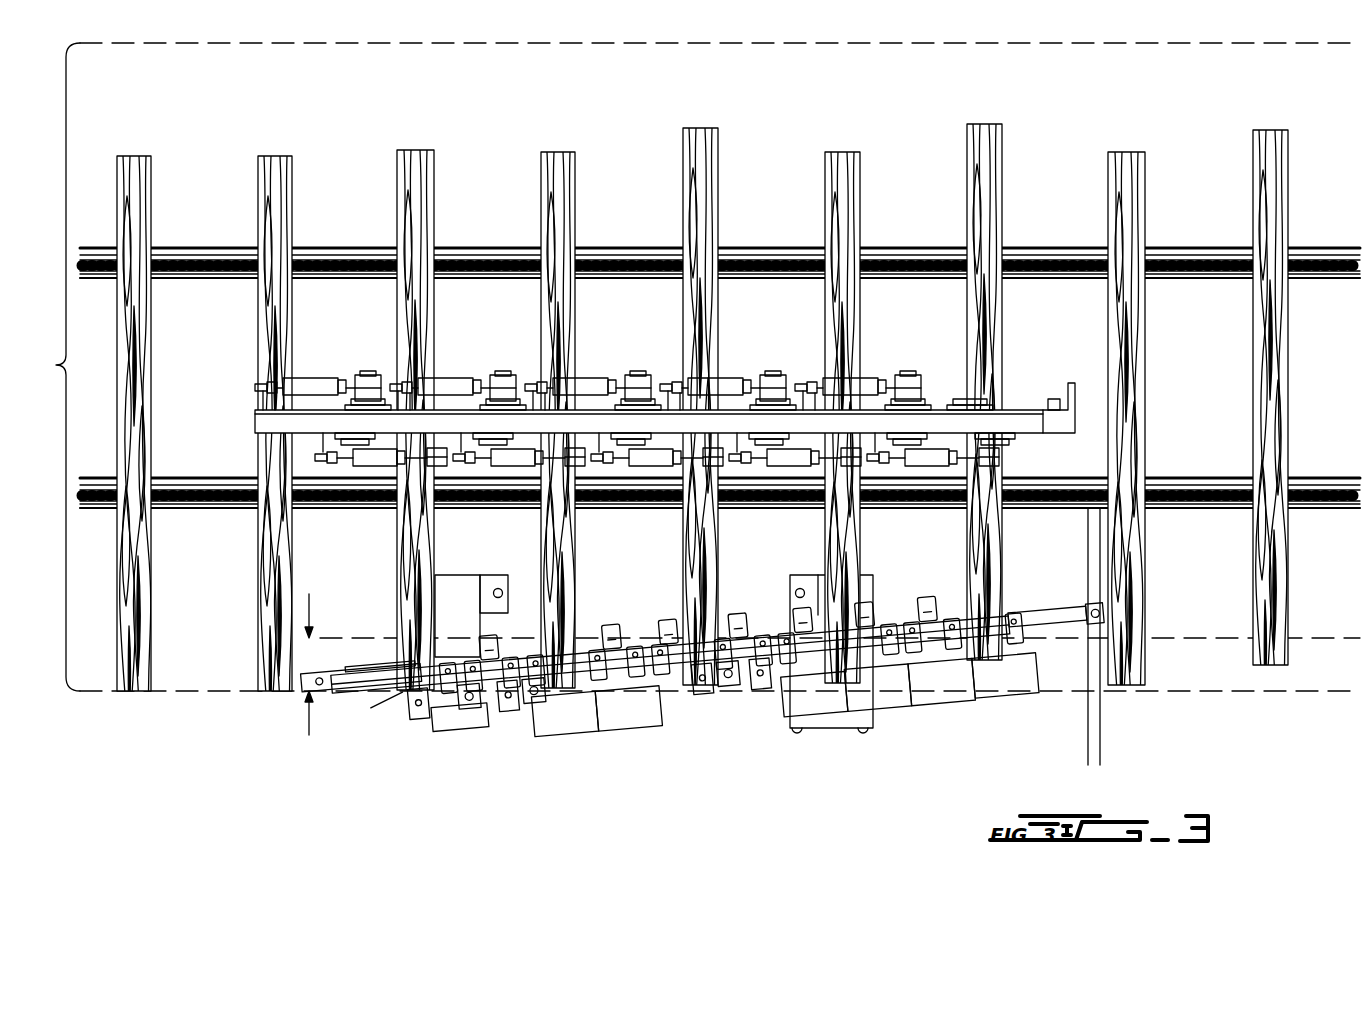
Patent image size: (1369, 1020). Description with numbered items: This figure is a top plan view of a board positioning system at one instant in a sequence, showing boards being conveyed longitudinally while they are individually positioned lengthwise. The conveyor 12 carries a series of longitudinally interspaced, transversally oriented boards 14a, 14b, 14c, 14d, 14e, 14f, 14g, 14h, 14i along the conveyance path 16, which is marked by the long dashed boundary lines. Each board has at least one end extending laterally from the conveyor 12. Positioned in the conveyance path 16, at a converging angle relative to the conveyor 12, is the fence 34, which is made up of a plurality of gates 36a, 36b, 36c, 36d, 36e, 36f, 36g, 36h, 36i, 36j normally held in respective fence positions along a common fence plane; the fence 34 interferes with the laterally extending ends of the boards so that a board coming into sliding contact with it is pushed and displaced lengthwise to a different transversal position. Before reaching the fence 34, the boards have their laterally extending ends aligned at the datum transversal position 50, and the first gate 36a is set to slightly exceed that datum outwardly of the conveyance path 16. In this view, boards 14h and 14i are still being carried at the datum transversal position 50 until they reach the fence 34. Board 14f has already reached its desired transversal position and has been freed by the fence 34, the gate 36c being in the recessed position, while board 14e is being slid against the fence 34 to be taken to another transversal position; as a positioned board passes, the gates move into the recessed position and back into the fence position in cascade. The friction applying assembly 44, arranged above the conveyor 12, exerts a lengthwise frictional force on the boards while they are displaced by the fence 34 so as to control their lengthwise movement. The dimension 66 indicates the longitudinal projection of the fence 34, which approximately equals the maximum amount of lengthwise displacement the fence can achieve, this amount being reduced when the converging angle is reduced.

The conveyor 12 is at (1311, 240).
The board 14a is at (1268, 130).
The board 14b is at (1125, 152).
The board 14c is at (983, 124).
The board 14d is at (842, 152).
The board 14e is at (699, 128).
The board 14f is at (559, 152).
The board 14g is at (416, 150).
The board 14h is at (275, 156).
The board 14i is at (134, 156).
The conveyance path 16 is at (690, 367).
The fence 34 is at (720, 427).
The first gate 36a is at (415, 706).
The gate 36b is at (520, 708).
The gate 36c is at (563, 735).
The gate 36d is at (630, 724).
The gate 36e is at (690, 700).
The gate 36f is at (758, 694).
The gate 36g is at (820, 705).
The gate 36h is at (888, 700).
The gate 36i is at (945, 694).
The gate 36j is at (1015, 686).
The friction applying assembly 44 is at (607, 418).
The datum transversal position 50 is at (178, 694).
The maximum amount of lengthwise displacement 66 is at (309, 725).